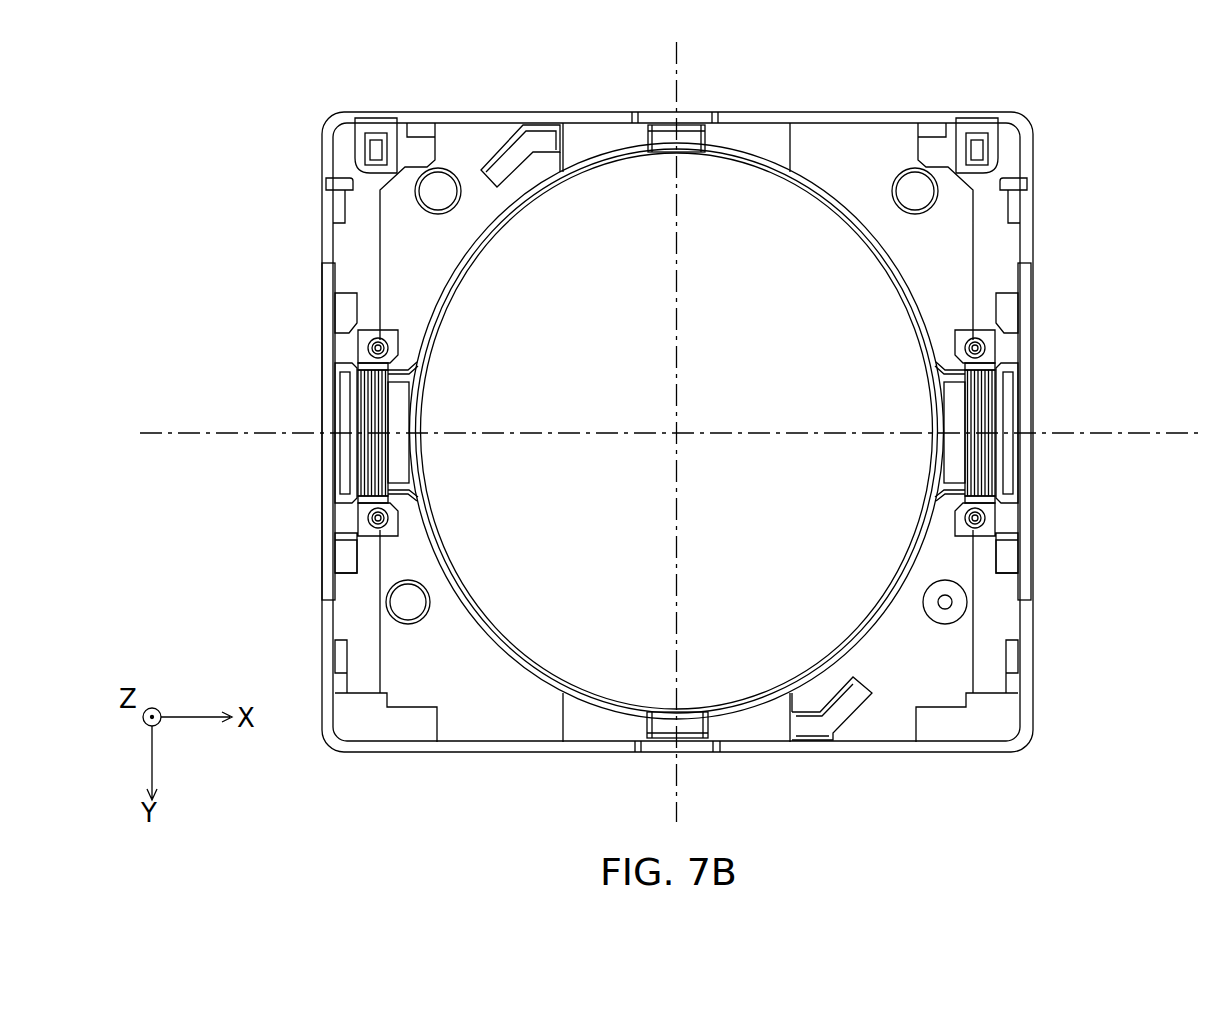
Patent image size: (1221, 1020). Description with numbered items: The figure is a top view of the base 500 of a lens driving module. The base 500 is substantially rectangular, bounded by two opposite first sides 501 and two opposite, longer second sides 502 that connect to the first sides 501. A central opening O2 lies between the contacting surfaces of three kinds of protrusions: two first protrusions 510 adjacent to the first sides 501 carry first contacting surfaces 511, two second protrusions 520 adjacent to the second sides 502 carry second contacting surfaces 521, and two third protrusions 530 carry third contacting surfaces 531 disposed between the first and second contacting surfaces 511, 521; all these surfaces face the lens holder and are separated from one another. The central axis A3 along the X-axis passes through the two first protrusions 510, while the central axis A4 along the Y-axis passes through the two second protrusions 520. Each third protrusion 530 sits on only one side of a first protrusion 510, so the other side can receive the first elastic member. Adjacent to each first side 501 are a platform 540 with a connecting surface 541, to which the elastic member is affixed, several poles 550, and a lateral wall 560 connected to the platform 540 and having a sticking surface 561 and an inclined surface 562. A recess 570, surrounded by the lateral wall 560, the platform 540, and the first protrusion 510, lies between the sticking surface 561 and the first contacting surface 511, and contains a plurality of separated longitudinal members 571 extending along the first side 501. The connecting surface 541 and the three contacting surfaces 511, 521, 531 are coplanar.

The base 500 is at (276, 67).
The first side 501 is at (330, 548).
The second side 502 is at (850, 112).
The first protrusion 510 is at (412, 468).
The first contacting surface 511 is at (400, 417).
The second protrusion 520 is at (658, 128).
The second contacting surface 521 is at (688, 140).
The third protrusion 530 is at (493, 165).
The third contacting surface 531 is at (533, 140).
The platform 540 is at (332, 255).
The connecting surface 541 is at (357, 243).
The pole 550 is at (368, 355).
The lateral wall 560 is at (345, 500).
The sticking surface 561 is at (350, 460).
The inclined surface 562 is at (343, 412).
The recess 570 is at (390, 372).
The longitudinal member 571 is at (360, 383).
The opening O2 is at (716, 236).
The central axis A3 is at (1194, 430).
The central axis A4 is at (683, 382).